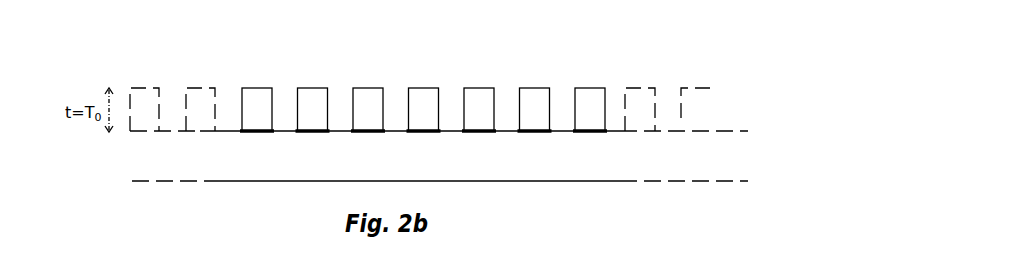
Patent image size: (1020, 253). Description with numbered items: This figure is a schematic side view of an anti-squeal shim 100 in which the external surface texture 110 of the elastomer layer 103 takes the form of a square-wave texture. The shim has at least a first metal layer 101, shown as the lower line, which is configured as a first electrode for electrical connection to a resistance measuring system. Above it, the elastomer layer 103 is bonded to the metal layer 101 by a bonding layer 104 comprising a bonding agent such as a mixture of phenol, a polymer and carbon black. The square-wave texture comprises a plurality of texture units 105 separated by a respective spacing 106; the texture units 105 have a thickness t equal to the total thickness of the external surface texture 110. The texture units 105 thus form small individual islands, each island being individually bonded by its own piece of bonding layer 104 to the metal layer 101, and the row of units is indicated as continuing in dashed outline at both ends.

The anti-squeal shim 100 is at (636, 63).
The first metal layer 101 is at (240, 183).
The elastomer layer 103 is at (242, 119).
The bonding layer 104 is at (305, 133).
The texture units 105 is at (257, 110).
The spacing 106 is at (455, 107).
The external surface texture 110 is at (312, 87).